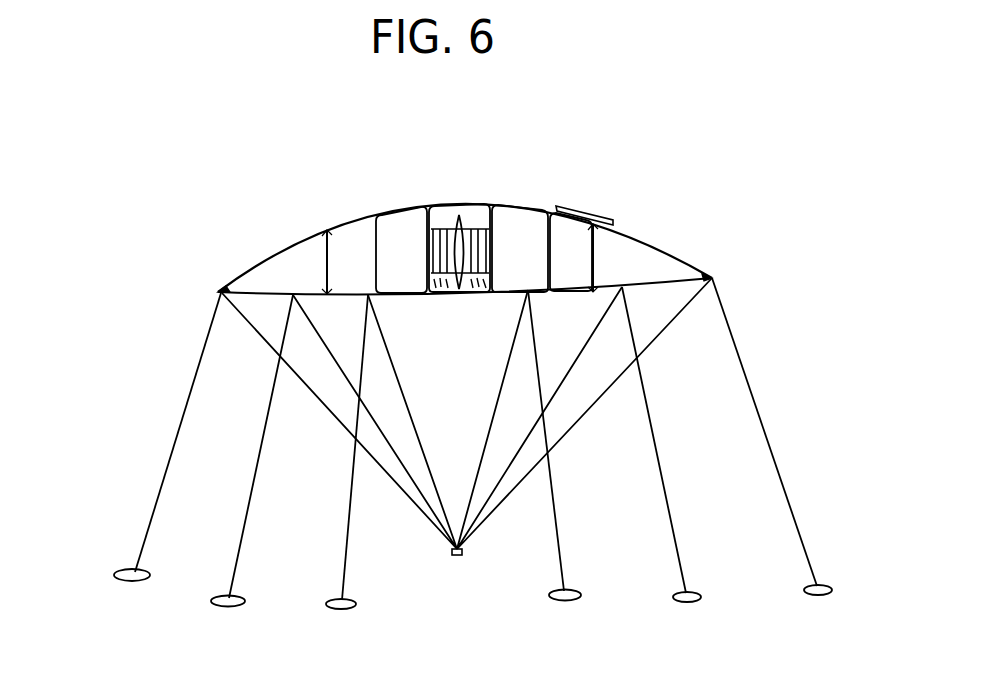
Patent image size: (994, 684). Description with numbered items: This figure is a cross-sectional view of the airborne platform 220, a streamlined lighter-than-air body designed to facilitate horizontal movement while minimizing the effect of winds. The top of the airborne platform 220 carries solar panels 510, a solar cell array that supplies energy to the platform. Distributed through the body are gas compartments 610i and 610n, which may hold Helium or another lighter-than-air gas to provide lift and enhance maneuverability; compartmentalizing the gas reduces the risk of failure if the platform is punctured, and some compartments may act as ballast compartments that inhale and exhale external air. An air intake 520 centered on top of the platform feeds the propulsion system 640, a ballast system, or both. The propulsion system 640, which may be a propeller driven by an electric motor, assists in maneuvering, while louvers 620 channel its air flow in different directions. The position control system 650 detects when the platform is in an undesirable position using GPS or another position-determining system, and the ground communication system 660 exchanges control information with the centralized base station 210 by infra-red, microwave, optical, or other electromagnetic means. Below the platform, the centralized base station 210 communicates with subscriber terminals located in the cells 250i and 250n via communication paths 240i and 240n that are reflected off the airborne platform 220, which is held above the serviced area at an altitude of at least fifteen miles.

The airborne platform 220 is at (216, 291).
The gas compartment 610i is at (362, 216).
The gas compartment 610n is at (658, 246).
The air intake 520 is at (464, 243).
The propulsion system 640 is at (483, 229).
The louvers 620 is at (444, 294).
The position control system 650 is at (513, 293).
The ground communication system 660 is at (390, 298).
The solar panels 510 is at (576, 206).
The communication path 240i is at (193, 381).
The communication path 240n is at (736, 360).
The cell 250i is at (118, 573).
The cell 250n is at (832, 590).
The centralized base station 210 is at (452, 552).